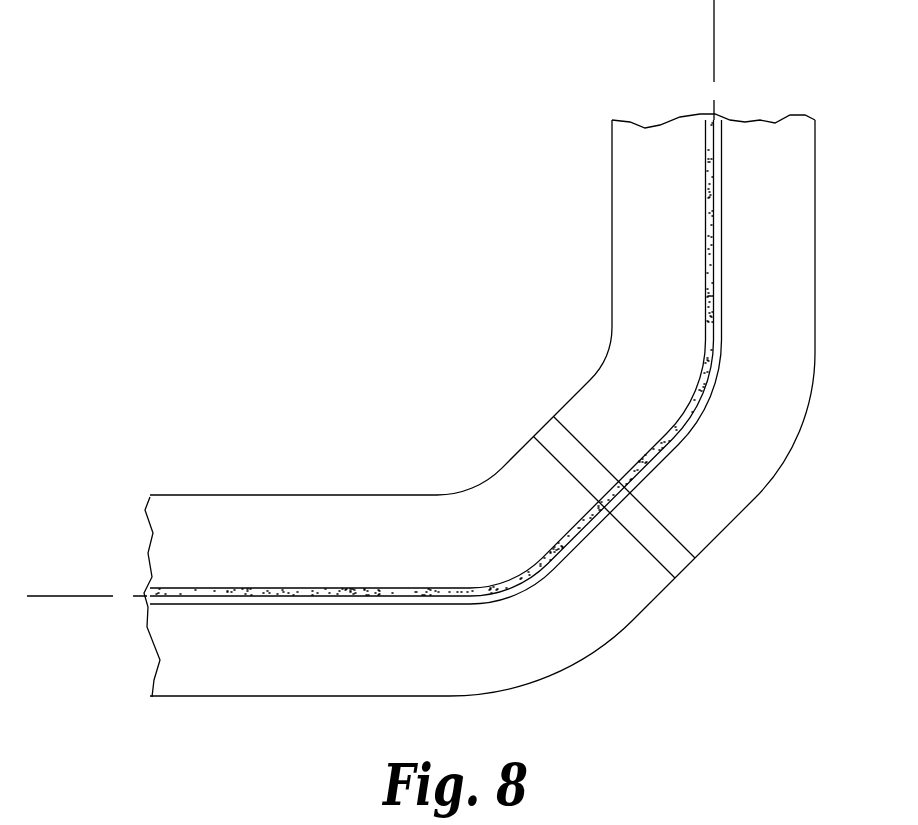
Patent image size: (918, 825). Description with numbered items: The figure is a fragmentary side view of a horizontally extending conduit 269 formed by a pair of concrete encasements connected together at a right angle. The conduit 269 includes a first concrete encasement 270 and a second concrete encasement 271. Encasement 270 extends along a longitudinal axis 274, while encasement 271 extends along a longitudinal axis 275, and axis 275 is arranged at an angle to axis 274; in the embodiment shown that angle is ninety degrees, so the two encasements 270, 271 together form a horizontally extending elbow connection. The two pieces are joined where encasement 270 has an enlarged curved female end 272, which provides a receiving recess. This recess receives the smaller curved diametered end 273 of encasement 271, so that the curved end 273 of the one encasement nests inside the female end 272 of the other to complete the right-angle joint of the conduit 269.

The horizontally extending conduit 269 is at (302, 518).
The concrete encasement 270 is at (280, 678).
The concrete encasement 271 is at (765, 440).
The enlarged curved female end 272 is at (653, 540).
The smaller curved diametered end 273 is at (682, 527).
The longitudinal axis 274 is at (73, 595).
The longitudinal axis 275 is at (714, 36).